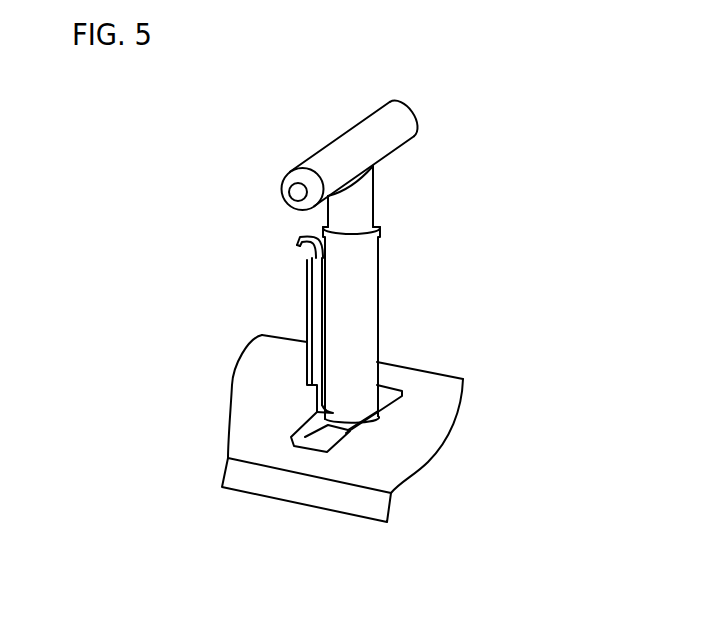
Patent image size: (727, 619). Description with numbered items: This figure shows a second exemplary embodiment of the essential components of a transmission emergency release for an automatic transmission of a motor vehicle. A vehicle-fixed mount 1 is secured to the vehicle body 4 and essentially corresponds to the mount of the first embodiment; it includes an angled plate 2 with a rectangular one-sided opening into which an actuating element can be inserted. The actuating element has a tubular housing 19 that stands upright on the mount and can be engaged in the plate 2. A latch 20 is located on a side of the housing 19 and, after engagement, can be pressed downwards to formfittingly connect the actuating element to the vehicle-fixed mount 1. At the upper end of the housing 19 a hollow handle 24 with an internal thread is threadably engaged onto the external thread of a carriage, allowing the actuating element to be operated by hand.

The vehicle-fixed mount 1 is at (308, 437).
The plate 2 is at (328, 423).
The vehicle body 4 is at (427, 390).
The tubular housing 19 is at (365, 300).
The latch 20 is at (297, 247).
The hollow handle 24 is at (418, 112).